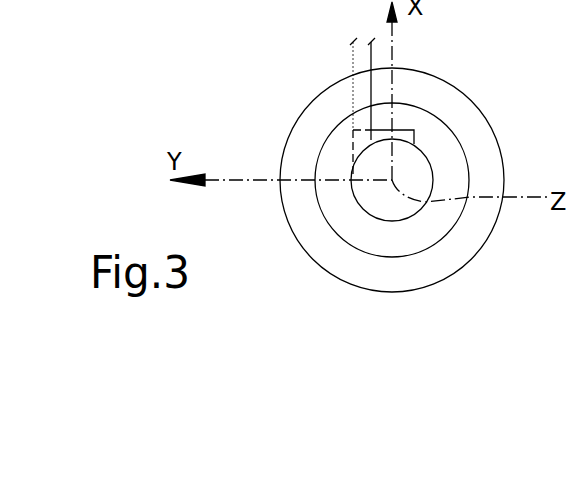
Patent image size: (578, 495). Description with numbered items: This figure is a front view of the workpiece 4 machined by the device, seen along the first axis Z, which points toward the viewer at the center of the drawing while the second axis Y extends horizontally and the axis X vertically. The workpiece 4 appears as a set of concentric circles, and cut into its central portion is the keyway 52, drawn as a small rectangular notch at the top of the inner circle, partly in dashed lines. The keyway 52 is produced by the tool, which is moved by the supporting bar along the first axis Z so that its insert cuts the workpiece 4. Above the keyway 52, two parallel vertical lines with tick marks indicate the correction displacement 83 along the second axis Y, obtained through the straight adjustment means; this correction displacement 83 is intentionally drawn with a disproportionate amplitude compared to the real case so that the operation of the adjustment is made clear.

The workpiece 4 is at (447, 255).
The keyway 52 is at (414, 141).
The correction displacement 83 is at (371, 42).